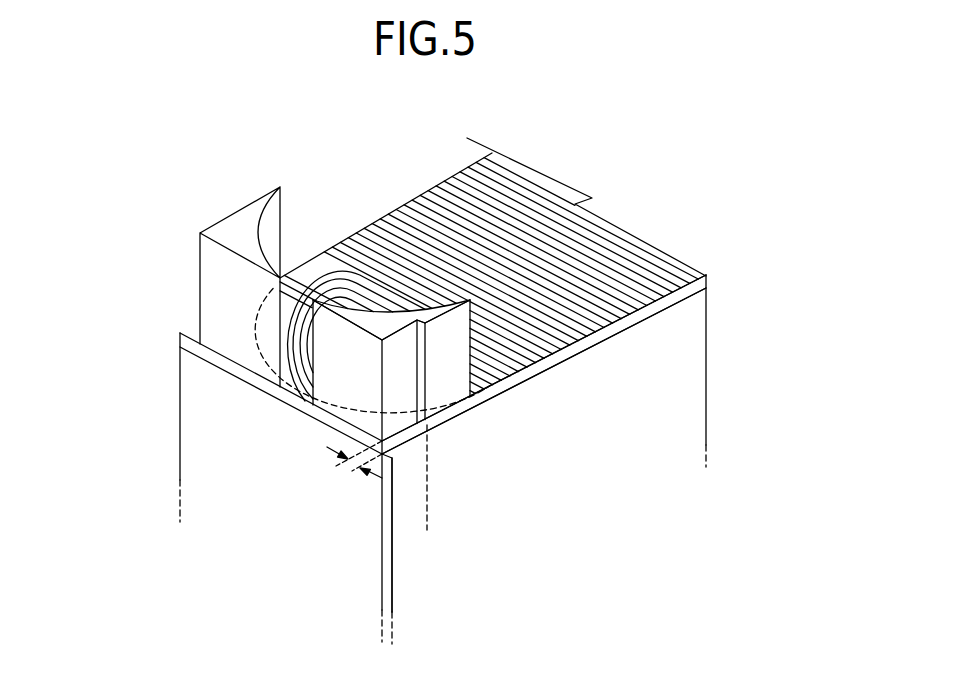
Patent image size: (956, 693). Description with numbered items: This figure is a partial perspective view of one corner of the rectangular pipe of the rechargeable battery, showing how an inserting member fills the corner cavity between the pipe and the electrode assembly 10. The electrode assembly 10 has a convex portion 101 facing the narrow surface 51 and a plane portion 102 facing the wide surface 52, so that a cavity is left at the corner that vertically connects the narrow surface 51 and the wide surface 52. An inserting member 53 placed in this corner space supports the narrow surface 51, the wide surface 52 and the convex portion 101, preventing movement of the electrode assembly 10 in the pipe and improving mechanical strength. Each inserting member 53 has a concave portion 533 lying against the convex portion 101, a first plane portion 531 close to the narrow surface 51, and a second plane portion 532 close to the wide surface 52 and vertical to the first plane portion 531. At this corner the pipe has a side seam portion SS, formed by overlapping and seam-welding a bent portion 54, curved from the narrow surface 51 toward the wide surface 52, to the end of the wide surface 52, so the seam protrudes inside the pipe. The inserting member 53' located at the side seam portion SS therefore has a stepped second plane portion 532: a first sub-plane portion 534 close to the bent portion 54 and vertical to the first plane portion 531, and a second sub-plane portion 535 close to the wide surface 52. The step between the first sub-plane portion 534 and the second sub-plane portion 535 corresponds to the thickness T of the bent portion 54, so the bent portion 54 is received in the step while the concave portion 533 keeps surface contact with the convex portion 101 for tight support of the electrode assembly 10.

The electrode assembly 10 is at (529, 214).
The convex portion 101 is at (252, 302).
The plane portion 102 is at (596, 339).
The narrow surface 51 is at (230, 358).
The wide surface 52 is at (442, 191).
The inserting member 53 is at (205, 287).
The inserting member 53' is at (287, 407).
The first plane portion 531 is at (357, 375).
The second plane portion 532 is at (608, 518).
The concave portion 533 is at (377, 300).
The first sub-plane portion 534 is at (402, 378).
The second sub-plane portion 535 is at (445, 362).
The bent portion 54 is at (405, 436).
The side seam portion SS is at (410, 527).
The thickness T is at (354, 466).